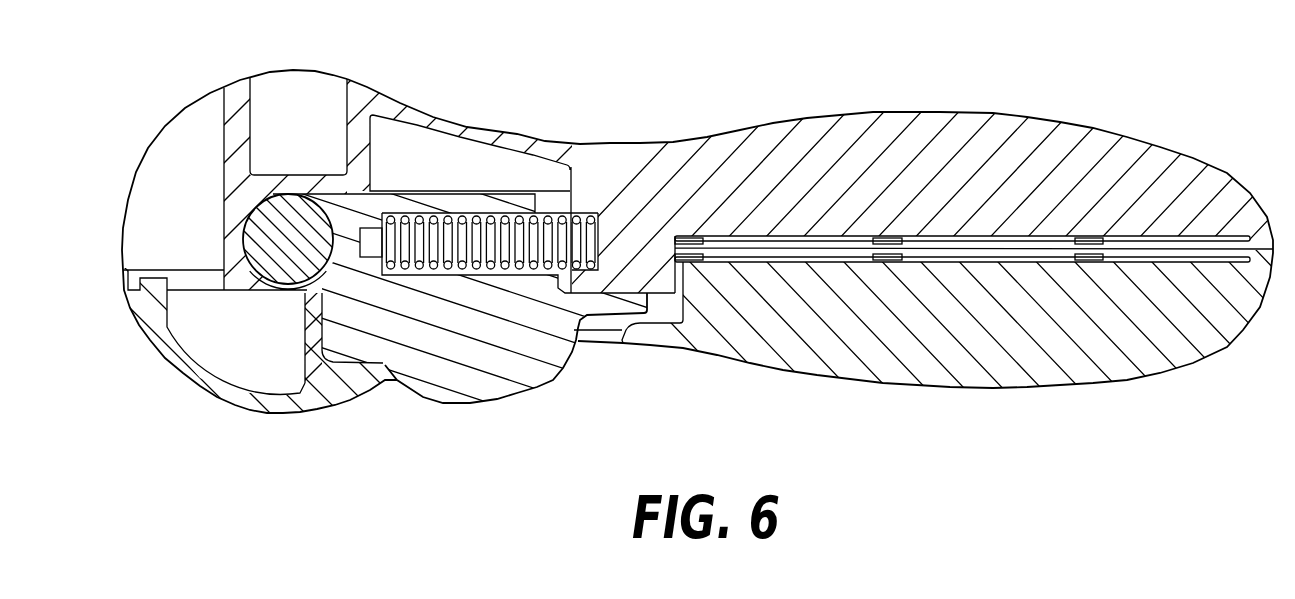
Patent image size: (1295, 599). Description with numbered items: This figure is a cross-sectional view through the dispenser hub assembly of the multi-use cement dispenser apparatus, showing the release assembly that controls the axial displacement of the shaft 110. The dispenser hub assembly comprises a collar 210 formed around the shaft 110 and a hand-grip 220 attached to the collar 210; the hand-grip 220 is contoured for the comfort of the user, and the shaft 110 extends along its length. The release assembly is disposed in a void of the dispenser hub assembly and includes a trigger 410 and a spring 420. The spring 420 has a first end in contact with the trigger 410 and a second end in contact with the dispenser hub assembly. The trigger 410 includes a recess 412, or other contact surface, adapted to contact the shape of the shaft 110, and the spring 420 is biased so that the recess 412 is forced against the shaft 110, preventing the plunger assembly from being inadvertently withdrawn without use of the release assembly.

The shaft 110 is at (270, 234).
The collar 210 is at (255, 412).
The hand-grip 220 is at (980, 112).
The trigger 410 is at (507, 365).
The recess 412 is at (312, 209).
The spring 420 is at (473, 243).